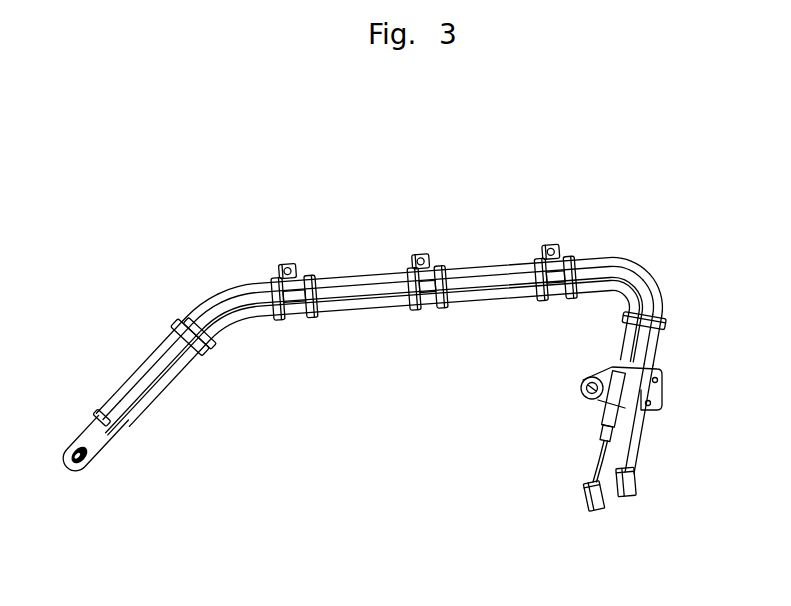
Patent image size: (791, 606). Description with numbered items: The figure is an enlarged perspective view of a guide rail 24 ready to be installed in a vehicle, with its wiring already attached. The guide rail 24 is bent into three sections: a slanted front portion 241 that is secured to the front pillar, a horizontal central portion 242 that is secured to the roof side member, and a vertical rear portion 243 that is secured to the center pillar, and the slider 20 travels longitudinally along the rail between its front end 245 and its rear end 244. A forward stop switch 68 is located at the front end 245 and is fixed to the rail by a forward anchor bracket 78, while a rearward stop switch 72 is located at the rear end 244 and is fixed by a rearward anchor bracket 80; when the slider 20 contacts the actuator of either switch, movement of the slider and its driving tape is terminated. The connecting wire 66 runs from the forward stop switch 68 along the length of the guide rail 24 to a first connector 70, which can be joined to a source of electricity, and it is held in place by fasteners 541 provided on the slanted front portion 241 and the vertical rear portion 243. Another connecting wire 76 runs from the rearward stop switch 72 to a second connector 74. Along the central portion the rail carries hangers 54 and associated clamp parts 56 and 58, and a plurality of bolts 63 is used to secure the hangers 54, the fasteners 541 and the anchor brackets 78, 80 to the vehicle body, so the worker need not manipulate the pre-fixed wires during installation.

The slider 20 is at (584, 384).
The guide rail 24 is at (501, 275).
The slanted front portion 241 is at (153, 362).
The horizontal central portion 242 is at (362, 276).
The vertical rear portion 243 is at (652, 347).
The rear end 244 is at (624, 417).
The front end 245 is at (105, 406).
The hanger 54 is at (308, 321).
The clamp 56 is at (283, 320).
The mounting tab 58 is at (290, 266).
The bolt 63 is at (565, 258).
The connecting wire 66 is at (651, 286).
The forward stop switch 68 is at (98, 416).
The first connector 70 is at (638, 482).
The rearward stop switch 72 is at (597, 443).
The second connector 74 is at (596, 510).
The connecting wire 76 is at (590, 476).
The forward anchor bracket 78 is at (92, 460).
The rearward anchor bracket 80 is at (661, 391).
The fastener 541 is at (178, 316).